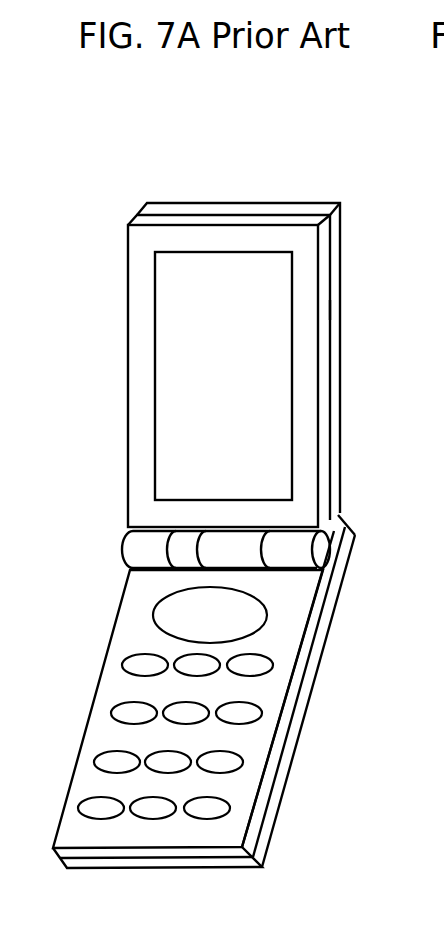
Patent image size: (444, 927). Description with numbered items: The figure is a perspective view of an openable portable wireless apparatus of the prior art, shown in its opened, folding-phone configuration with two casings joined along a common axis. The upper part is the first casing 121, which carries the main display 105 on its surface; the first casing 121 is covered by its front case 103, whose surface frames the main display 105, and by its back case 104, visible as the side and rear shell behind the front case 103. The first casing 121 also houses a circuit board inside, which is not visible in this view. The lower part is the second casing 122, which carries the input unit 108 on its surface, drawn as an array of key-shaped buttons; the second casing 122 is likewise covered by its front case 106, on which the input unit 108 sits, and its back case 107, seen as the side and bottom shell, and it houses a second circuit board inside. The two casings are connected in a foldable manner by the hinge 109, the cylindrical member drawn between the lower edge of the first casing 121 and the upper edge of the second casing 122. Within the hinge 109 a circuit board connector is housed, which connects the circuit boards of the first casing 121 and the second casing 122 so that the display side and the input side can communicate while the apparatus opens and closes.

The front case 103 is at (308, 273).
The back case 104 is at (333, 310).
The main display 105 is at (277, 380).
The front case 106 is at (303, 657).
The back case 107 is at (307, 703).
The input unit 108 is at (238, 742).
The hinge 109 is at (323, 553).
The first casing 121 is at (107, 207).
The second casing 122 is at (117, 557).